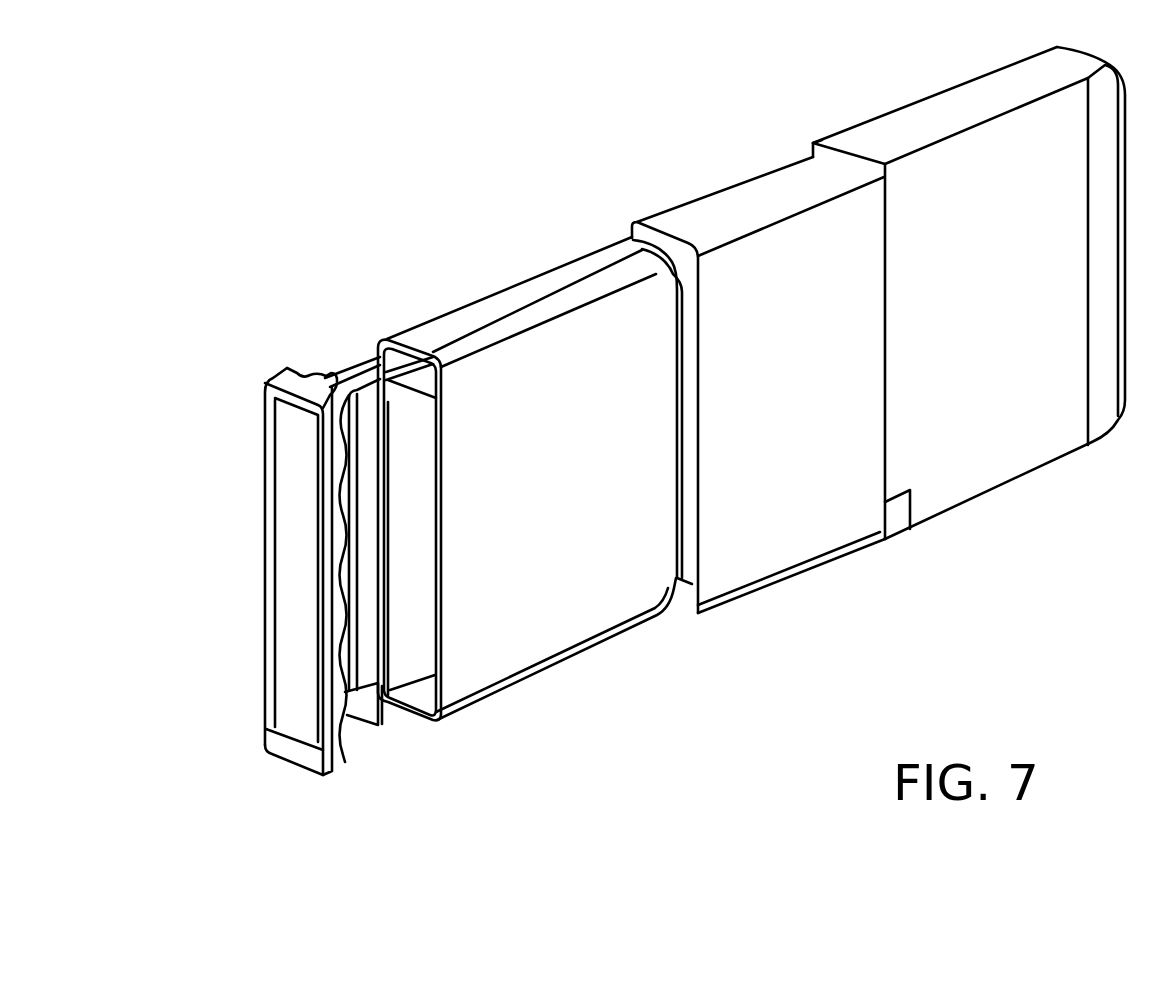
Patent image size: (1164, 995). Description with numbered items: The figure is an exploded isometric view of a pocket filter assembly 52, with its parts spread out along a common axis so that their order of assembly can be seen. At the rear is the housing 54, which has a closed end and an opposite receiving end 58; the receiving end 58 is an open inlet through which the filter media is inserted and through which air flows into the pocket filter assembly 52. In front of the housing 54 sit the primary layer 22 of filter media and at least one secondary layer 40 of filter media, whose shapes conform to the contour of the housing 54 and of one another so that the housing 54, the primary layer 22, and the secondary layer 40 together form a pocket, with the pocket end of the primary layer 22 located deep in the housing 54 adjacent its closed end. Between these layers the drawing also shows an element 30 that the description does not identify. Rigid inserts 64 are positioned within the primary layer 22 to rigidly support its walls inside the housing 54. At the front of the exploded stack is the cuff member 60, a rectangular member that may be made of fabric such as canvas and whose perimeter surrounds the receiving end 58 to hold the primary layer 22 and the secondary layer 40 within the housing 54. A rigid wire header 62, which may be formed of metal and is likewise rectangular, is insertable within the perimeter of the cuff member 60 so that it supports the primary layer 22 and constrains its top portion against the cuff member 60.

The primary layer of filter media 22 is at (820, 518).
The collar 30 is at (690, 583).
The secondary layer of filter media 40 is at (556, 609).
The pocket filter assembly 52 is at (440, 176).
The housing 54 is at (1022, 447).
The receiving end 58 is at (812, 150).
The cuff member 60 is at (293, 753).
The rigid wire header 62 is at (383, 720).
The rigid inserts 64 is at (413, 417).